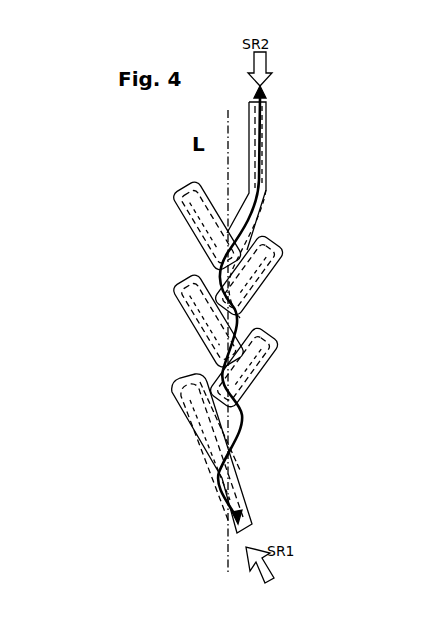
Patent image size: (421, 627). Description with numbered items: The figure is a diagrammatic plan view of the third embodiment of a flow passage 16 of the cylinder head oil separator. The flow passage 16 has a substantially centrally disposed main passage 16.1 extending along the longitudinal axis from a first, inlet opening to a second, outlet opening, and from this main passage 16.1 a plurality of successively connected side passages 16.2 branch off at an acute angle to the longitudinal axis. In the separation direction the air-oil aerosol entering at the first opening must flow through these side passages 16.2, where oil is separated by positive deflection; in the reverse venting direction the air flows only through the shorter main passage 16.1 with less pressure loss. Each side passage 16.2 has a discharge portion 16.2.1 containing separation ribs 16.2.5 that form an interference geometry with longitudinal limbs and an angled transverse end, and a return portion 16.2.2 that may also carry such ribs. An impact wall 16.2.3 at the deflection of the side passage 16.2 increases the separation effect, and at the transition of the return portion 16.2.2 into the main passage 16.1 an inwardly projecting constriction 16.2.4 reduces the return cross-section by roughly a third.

The flow passage 16 is at (146, 243).
The central main passage 16.1 is at (243, 222).
The side passage 16.2 is at (178, 443).
The discharge portion 16.2.1 is at (205, 450).
The return portion 16.2.2 is at (218, 415).
The impact wall 16.2.3 is at (187, 381).
The constriction 16.2.4 is at (235, 427).
The separation ribs 16.2.5 is at (197, 428).